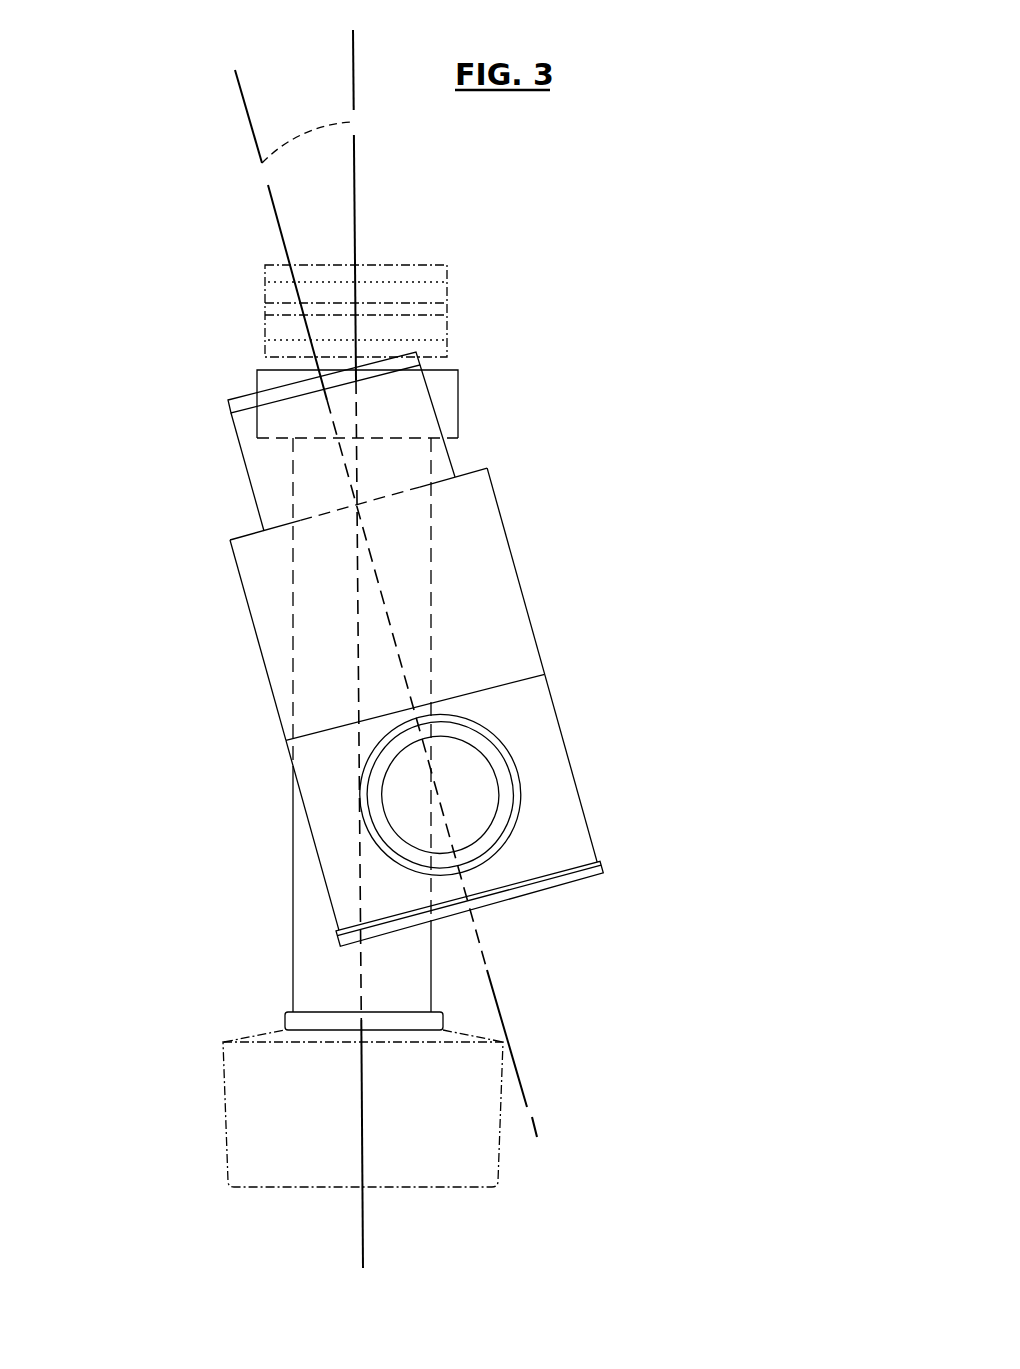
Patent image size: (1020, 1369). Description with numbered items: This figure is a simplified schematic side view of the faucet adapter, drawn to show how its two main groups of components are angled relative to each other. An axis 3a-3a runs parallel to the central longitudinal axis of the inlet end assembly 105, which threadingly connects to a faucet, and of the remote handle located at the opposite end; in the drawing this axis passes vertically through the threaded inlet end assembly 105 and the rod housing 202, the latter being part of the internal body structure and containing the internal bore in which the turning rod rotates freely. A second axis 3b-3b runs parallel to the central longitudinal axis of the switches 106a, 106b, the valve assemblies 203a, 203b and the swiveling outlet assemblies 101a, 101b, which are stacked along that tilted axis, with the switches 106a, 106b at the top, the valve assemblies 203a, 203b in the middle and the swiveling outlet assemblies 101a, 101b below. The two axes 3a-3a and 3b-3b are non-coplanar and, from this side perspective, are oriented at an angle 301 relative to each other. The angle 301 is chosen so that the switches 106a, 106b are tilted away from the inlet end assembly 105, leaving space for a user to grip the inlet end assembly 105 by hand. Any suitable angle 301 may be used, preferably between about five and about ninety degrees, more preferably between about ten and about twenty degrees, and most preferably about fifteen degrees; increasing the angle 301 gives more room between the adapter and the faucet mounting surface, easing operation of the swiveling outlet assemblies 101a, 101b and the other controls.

The axis 3a- 3a is at (361, 659).
The axis 3b- 3b is at (382, 612).
The angle 301 is at (302, 116).
The inlet end assembly 105 is at (418, 290).
The switch 106a is at (275, 443).
The switch 106b is at (253, 462).
The valve assembly 203a is at (540, 544).
The valve assembly 203b is at (467, 568).
The swiveling outlet assembly 101a is at (573, 785).
The swiveling outlet assembly 101b is at (553, 831).
The rod housing 202 is at (302, 935).